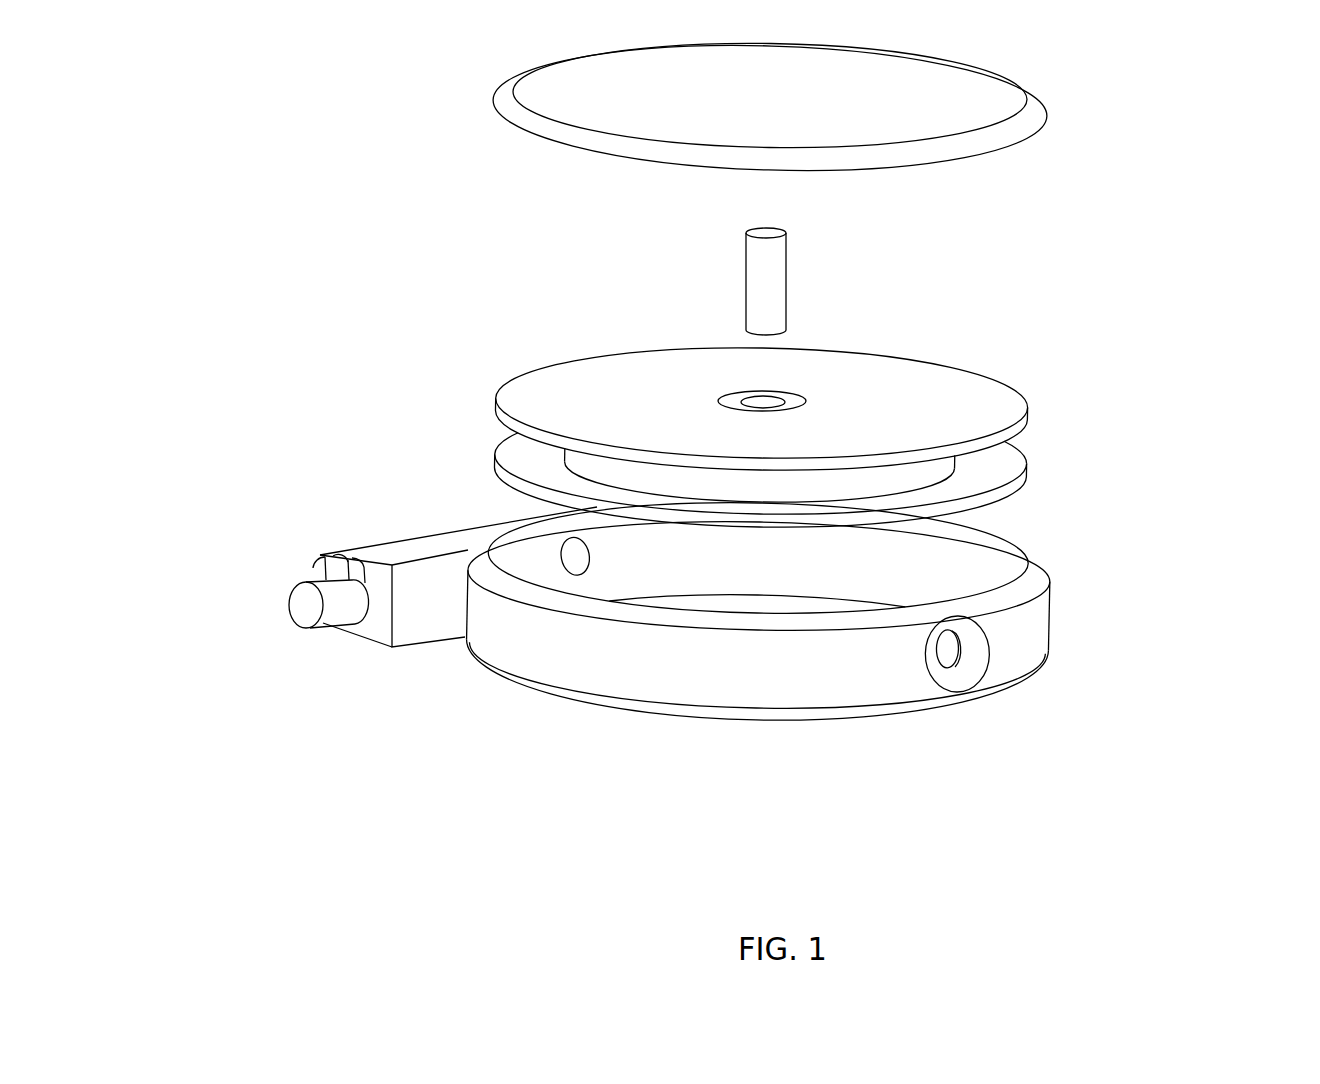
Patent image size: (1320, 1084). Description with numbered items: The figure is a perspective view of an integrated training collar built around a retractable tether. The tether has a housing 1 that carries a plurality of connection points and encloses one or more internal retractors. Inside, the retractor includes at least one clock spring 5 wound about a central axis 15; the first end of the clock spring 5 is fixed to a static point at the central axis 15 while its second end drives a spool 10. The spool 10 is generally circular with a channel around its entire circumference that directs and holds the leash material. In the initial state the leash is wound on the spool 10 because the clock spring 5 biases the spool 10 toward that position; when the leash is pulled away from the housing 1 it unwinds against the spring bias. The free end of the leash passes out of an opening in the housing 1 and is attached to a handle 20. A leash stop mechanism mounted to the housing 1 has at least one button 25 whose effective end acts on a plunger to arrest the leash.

The housing 1 is at (1032, 632).
The clock spring 5 is at (797, 395).
The spool 10 is at (1013, 408).
The central axis 15 is at (764, 290).
The handle 20 is at (420, 547).
The button 25 is at (315, 602).